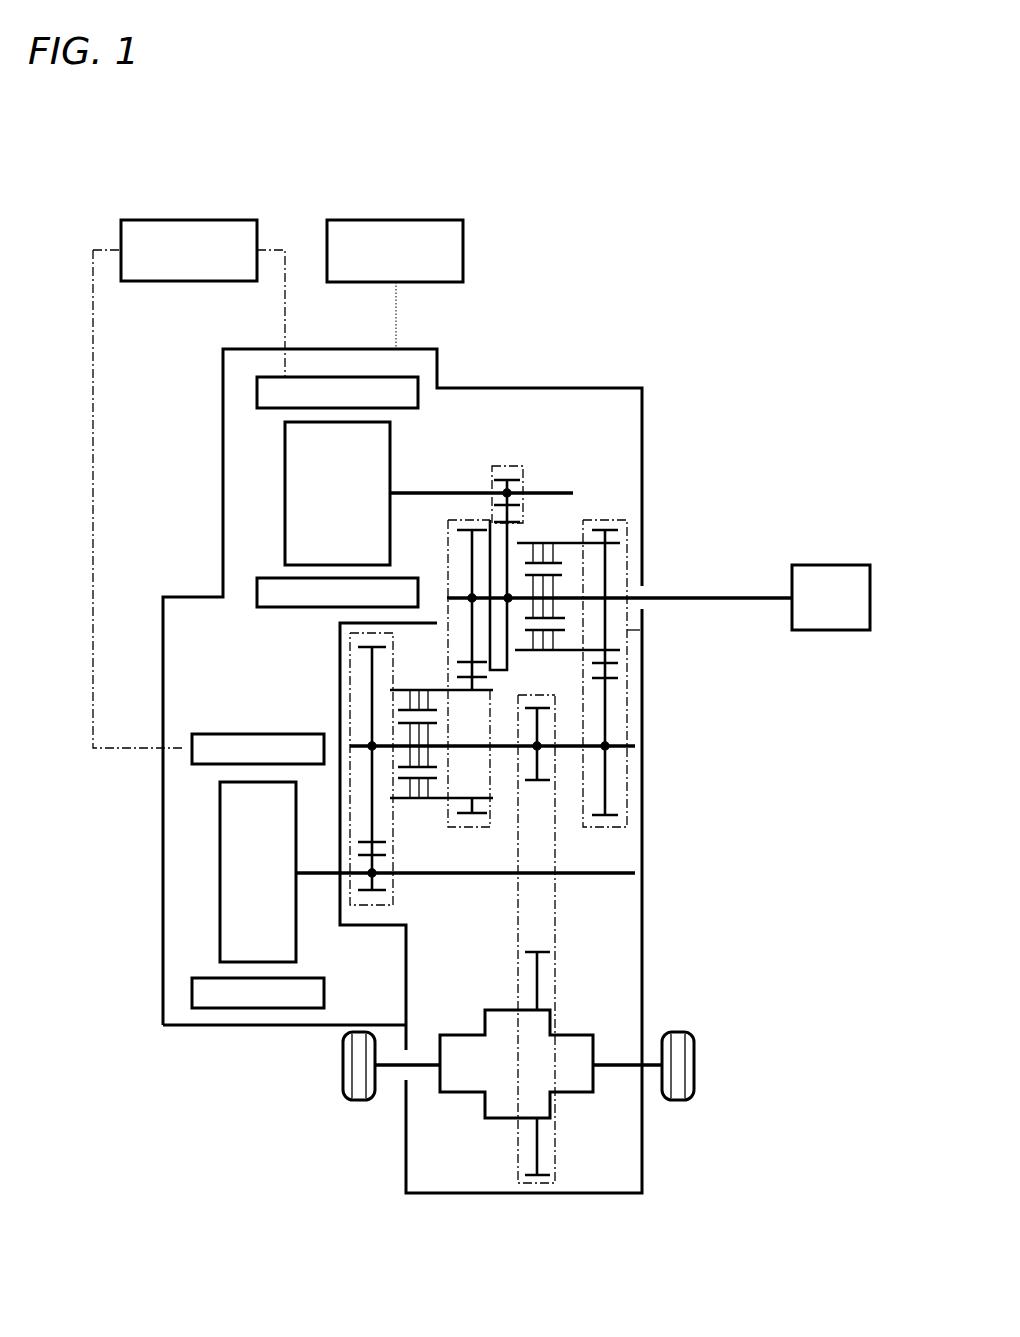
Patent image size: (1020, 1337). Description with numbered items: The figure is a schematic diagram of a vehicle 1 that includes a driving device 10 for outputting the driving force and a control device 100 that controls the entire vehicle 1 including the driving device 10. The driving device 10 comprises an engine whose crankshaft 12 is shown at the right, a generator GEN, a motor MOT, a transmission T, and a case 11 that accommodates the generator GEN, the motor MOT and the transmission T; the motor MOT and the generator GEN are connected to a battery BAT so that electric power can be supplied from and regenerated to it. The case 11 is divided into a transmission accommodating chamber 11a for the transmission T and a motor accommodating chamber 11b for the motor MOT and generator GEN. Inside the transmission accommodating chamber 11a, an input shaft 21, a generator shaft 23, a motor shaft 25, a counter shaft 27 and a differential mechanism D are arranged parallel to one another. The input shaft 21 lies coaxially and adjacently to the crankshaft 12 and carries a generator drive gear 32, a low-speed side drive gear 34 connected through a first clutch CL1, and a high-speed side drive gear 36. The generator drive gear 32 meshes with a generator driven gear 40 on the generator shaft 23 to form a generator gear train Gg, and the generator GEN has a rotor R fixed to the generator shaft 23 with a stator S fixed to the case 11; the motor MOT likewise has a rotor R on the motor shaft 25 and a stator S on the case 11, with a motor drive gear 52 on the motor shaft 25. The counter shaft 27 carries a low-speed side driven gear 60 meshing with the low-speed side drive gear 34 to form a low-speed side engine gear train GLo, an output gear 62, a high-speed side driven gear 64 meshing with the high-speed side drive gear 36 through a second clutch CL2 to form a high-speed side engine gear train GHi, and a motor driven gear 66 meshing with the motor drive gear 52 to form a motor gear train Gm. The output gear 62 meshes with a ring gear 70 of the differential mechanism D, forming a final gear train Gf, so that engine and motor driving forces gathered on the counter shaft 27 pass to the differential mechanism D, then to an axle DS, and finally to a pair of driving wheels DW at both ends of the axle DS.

The vehicle 1 is at (578, 238).
The driving device 10 is at (482, 362).
The case 11 is at (643, 418).
The transmission accommodating chamber 11a is at (623, 912).
The motor accommodating chamber 11b is at (200, 627).
The crankshaft 12 is at (731, 597).
The input shaft 21 is at (636, 583).
The generator shaft 23 is at (600, 473).
The motor shaft 25 is at (612, 868).
The counter shaft 27 is at (635, 750).
The generator drive gear 32 is at (530, 548).
The low-speed side drive gear 34 is at (608, 512).
The high-speed side drive gear 36 is at (448, 522).
The generator driven gear 40 is at (502, 466).
The motor drive gear 52 is at (394, 890).
The low-speed side driven gear 60 is at (615, 682).
The output gear 62 is at (538, 704).
The high-speed side driven gear 64 is at (462, 826).
The motor driven gear 66 is at (397, 648).
The ring gear 70 is at (530, 950).
The control device 100 is at (440, 220).
The battery BAT is at (189, 484).
The generator GEN is at (248, 483).
The motor MOT is at (172, 730).
The transmission T is at (562, 418).
The stator S is at (258, 392).
The rotor R is at (298, 510).
The generator gear train Gg is at (525, 472).
The first clutch CL1 is at (572, 550).
The second clutch CL2 is at (405, 695).
The low-speed side engine gear train GLo is at (640, 630).
The high-speed side engine gear train GHi is at (447, 818).
The motor gear train Gm is at (370, 906).
The differential mechanism D is at (480, 1000).
The final gear train Gf is at (556, 1000).
The axle DS is at (440, 1068).
The driving wheels DW is at (342, 1084).